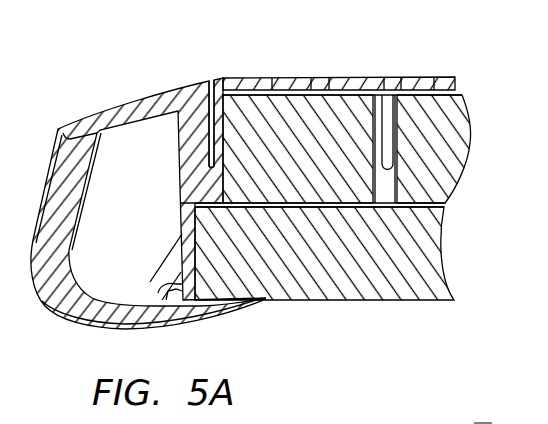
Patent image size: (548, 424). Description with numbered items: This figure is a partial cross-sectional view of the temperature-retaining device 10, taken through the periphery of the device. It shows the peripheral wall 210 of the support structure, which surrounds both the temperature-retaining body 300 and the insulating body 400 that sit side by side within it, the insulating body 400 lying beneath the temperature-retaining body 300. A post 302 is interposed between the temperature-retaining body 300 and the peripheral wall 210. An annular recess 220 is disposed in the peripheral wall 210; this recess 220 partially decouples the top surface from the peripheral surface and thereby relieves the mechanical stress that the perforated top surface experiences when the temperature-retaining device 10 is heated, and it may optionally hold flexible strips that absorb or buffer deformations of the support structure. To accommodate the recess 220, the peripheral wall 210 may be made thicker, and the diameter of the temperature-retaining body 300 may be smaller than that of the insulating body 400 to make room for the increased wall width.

The temperature-retaining device 10 is at (64, 320).
The peripheral wall 210 is at (191, 230).
The annular recess 220 is at (211, 81).
The temperature-retaining body 300 is at (329, 120).
The post 302 is at (387, 120).
The insulating body 400 is at (424, 277).